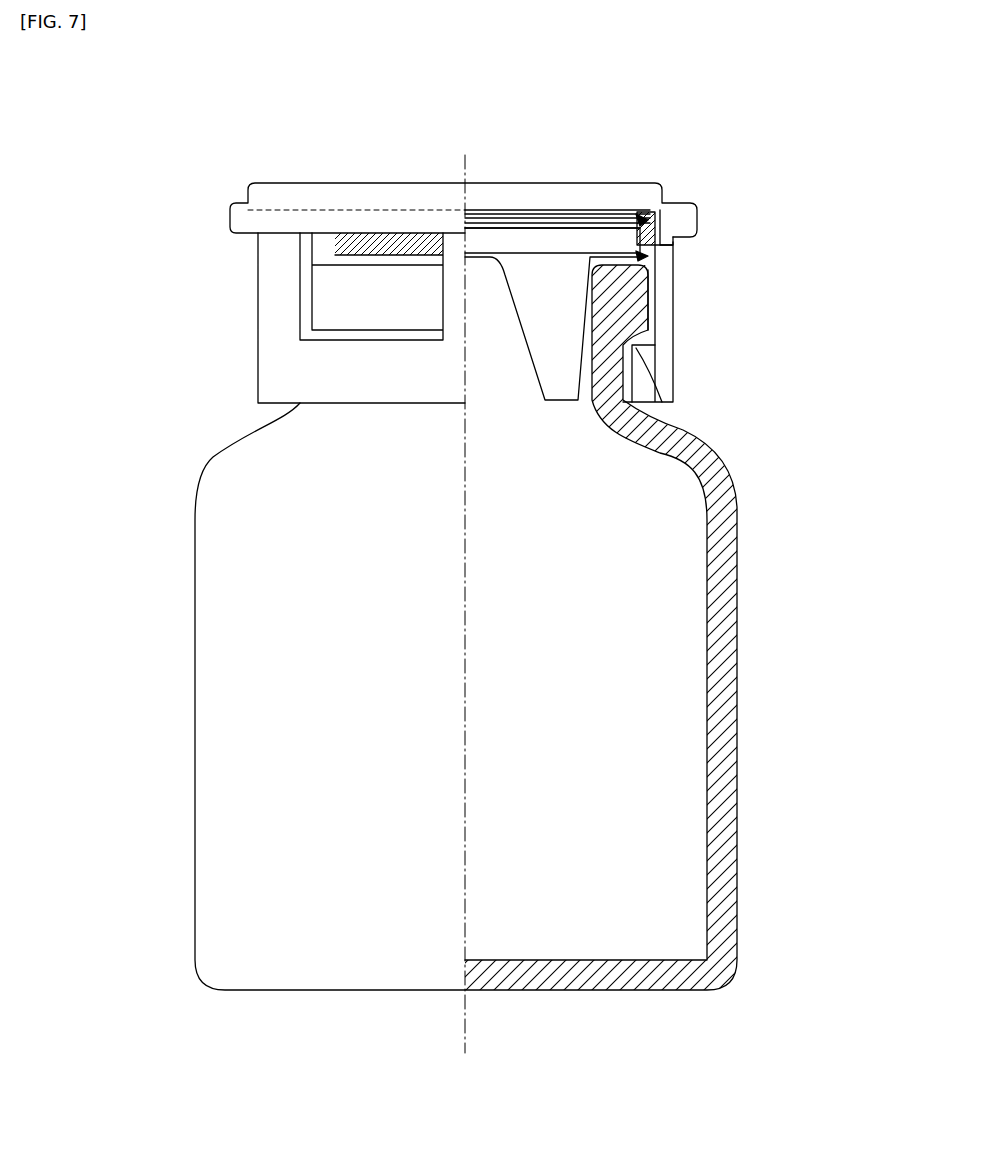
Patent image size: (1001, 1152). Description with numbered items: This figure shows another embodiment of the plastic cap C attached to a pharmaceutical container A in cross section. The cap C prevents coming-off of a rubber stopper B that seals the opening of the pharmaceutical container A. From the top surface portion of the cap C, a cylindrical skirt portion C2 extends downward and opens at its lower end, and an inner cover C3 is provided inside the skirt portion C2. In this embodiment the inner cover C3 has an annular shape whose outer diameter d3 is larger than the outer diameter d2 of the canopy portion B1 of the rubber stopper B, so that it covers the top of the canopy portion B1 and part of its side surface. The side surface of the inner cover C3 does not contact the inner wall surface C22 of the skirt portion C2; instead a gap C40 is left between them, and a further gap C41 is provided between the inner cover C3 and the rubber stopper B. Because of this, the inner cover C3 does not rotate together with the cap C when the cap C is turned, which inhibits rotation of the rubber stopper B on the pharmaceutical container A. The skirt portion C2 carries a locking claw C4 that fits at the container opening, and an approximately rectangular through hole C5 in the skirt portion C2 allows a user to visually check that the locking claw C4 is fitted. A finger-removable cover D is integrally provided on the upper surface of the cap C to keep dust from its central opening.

The pharmaceutical container A is at (745, 483).
The rubber stopper B is at (552, 246).
The canopy portion B1 is at (615, 224).
The cap C is at (683, 332).
The skirt portion C2 is at (674, 292).
The inner wall surface C22 is at (649, 256).
The inner cover C3 is at (593, 215).
The locking claw C4 is at (675, 347).
The gap C40 is at (698, 237).
The gap C41 is at (648, 212).
The through hole C5 is at (327, 307).
The cover D is at (697, 187).
The outer diameter of the canopy portion d2 is at (462, 247).
The outer diameter of the inner cover d3 is at (517, 225).